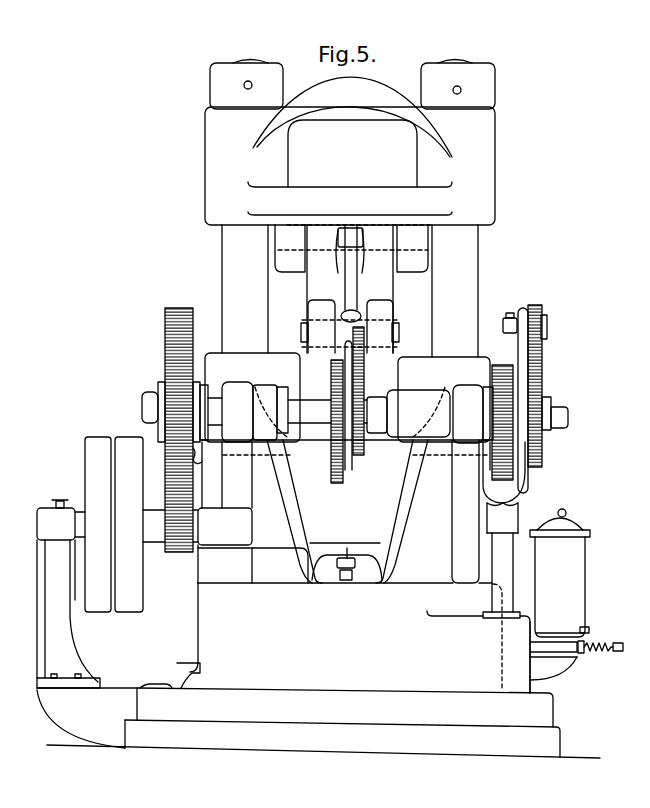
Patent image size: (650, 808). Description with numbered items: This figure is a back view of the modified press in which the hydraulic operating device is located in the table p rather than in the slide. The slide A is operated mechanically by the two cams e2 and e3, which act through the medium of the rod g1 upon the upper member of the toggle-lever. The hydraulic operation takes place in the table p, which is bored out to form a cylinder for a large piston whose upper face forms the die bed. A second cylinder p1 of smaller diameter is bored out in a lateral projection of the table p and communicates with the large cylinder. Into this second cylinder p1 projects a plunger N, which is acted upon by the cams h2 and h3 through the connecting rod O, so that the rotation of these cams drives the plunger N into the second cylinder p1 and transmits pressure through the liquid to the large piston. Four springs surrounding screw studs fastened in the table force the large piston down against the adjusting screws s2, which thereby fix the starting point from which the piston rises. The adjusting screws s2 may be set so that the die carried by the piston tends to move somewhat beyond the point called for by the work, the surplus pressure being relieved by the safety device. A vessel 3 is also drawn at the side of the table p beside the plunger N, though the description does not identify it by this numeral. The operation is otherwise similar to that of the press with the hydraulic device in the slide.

The slide A is at (252, 344).
The rod g1 is at (352, 287).
The cam e3 is at (333, 378).
The cam e2 is at (362, 378).
The cam h3 is at (503, 377).
The cam h2 is at (537, 370).
The connecting rod O is at (508, 514).
The plunger N is at (502, 561).
The adjusting screws s2 is at (347, 548).
The table p is at (318, 670).
The second cylinder p1 is at (540, 657).
The oil reservoir 3 is at (576, 583).